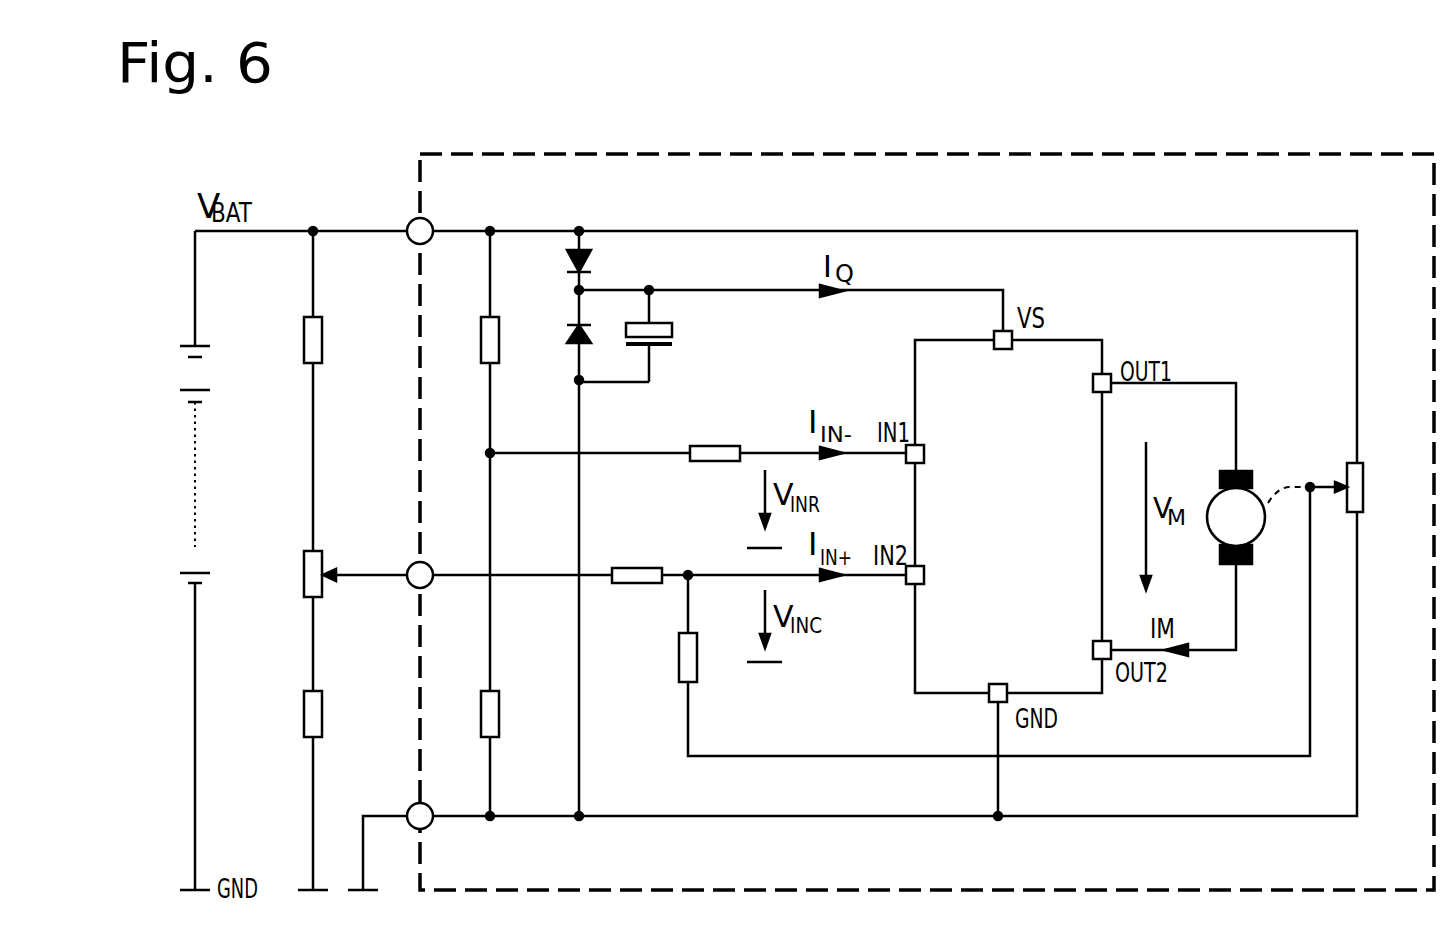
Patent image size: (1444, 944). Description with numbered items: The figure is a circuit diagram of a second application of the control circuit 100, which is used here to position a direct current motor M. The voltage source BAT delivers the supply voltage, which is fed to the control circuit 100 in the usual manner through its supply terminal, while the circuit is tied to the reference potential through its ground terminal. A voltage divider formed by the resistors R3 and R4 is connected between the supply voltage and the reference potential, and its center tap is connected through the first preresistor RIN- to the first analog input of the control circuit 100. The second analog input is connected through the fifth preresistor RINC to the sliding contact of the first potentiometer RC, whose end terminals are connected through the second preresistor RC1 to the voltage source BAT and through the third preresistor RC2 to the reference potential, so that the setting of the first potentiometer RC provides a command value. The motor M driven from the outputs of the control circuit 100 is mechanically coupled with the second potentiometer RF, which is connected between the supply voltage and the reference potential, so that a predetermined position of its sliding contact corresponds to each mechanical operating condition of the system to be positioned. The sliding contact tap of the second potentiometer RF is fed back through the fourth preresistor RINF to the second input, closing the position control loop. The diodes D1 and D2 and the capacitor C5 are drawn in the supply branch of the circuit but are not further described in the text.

The control circuit 100 is at (1067, 350).
The voltage source BAT is at (171, 560).
The second preresistor RC1 is at (340, 335).
The first potentiometer RC is at (355, 565).
The third preresistor RC2 is at (340, 714).
The voltage divider resistor R3 is at (473, 337).
The voltage divider resistor R4 is at (473, 715).
The diode D1 is at (562, 258).
The diode D2 is at (562, 336).
The capacitor C5 is at (669, 334).
The first preresistor RIN- is at (715, 434).
The fifth preresistor RINC is at (639, 554).
The fourth preresistor RINF is at (657, 657).
The second potentiometer RF is at (1315, 476).
The direct current motor M is at (1236, 517).